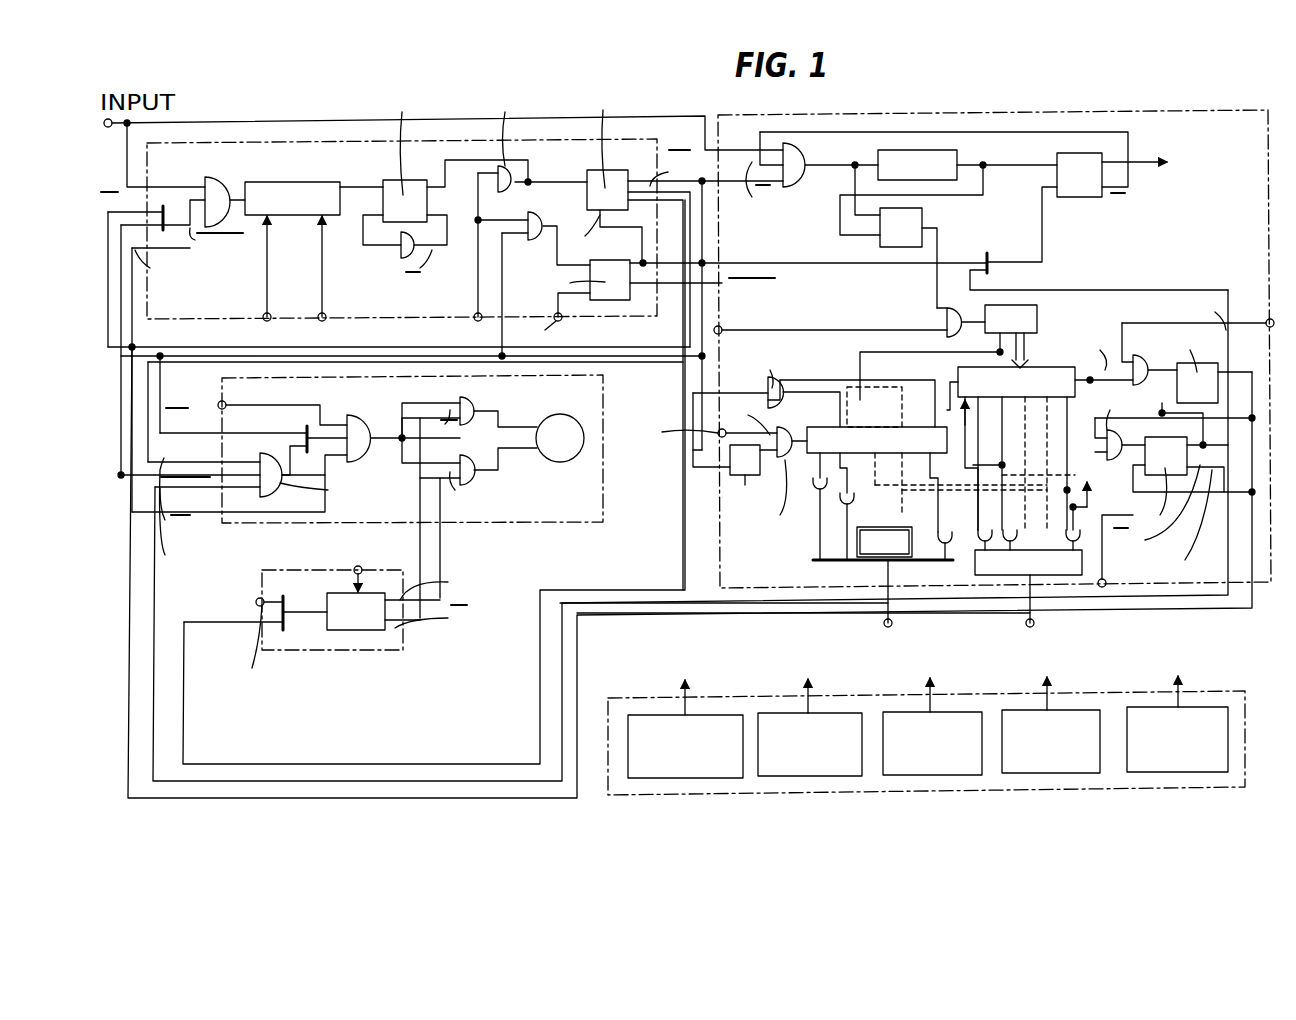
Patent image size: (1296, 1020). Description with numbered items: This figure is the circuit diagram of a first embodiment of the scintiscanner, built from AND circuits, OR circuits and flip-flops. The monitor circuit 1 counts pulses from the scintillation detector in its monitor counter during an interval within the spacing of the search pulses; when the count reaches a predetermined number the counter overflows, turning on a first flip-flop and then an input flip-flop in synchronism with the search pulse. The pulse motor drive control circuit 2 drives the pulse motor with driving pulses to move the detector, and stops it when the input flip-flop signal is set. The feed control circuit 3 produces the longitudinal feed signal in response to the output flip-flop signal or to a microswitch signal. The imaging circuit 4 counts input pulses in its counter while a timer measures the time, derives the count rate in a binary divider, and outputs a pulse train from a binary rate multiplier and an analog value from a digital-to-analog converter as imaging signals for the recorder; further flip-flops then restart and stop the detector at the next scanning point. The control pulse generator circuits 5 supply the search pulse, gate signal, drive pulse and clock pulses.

The monitor circuit 1 is at (270, 142).
The pulse motor drive control circuit 2 is at (563, 522).
The feed control circuit 3 is at (378, 650).
The imaging circuit 4 is at (1072, 110).
The control pulse generator circuits 5 is at (1210, 692).